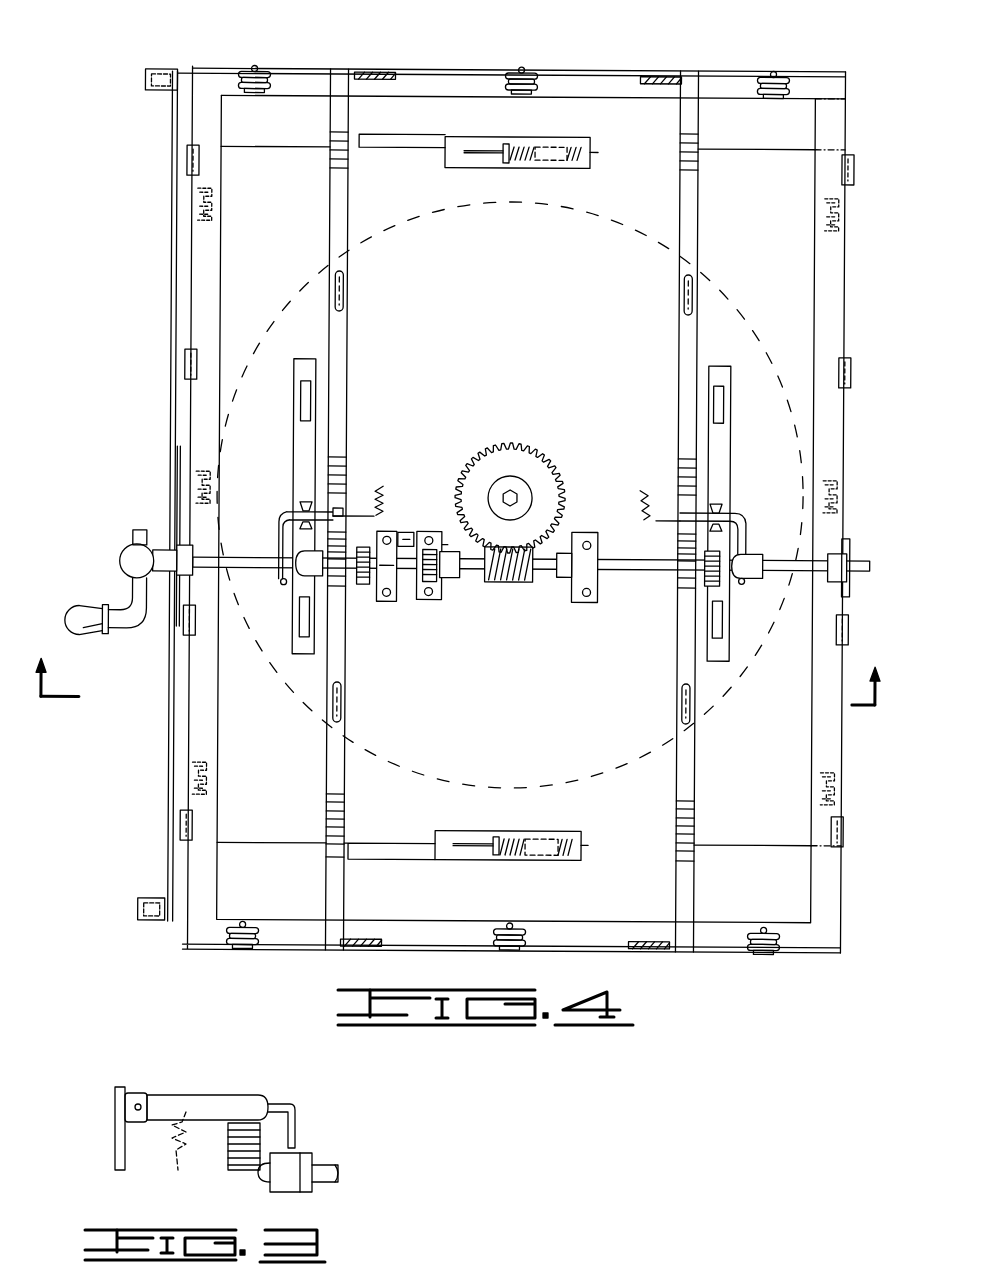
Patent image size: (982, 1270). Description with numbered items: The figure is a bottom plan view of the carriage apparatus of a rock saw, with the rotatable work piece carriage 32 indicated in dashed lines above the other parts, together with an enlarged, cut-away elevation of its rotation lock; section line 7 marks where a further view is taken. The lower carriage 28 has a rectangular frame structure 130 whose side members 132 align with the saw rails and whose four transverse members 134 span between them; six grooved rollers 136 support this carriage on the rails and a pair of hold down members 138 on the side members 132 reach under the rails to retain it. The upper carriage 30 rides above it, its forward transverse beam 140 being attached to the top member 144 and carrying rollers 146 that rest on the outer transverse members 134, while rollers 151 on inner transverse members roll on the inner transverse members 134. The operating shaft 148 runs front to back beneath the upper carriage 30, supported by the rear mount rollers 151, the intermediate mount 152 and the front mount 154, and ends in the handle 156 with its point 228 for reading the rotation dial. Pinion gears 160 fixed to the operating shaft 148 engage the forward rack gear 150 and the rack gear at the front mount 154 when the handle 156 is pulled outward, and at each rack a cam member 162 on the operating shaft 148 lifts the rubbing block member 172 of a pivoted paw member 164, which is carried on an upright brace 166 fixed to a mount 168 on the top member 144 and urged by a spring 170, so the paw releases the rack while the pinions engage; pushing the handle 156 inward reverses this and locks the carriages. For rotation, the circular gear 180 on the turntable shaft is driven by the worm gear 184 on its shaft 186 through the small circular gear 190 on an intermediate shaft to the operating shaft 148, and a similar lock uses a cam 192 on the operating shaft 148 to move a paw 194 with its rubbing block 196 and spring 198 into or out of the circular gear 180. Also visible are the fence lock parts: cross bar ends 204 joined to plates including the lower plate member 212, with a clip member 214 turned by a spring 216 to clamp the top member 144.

In FIG. 4, the section line 7- 7 is at (458, 670).
In FIG. 4, the lower carriage 28 is at (475, 36).
In FIG. 4, the upper carriage 30 is at (604, 128).
In FIG. 4, the work piece carriage 32 is at (766, 337).
In FIG. 4, the rectangular frame structure 130 is at (815, 67).
In FIG. 4, the side members 132 is at (470, 82).
In FIG. 4, the transverse members 134 is at (325, 888).
In FIG. 4, the rollers 136 is at (246, 67).
In FIG. 4, the hold down members 138 is at (364, 73).
In FIG. 4, the forward transverse beam 140 is at (839, 568).
In FIG. 4, the top member 144 is at (769, 133).
In FIG. 4, the rollers 146 is at (197, 208).
In FIG. 4, the operating shaft 148 is at (620, 564).
In FIG. 9, the operating shaft 148 is at (338, 1172).
In FIG. 4, the forward rack gear 150 is at (347, 470).
In FIG. 4, the rollers 151 is at (343, 293).
In FIG. 4, the intermediate mount 152 is at (384, 600).
In FIG. 4, the front mount 154 is at (678, 458).
In FIG. 4, the handle 156 is at (120, 568).
In FIG. 4, the pinion gears 160 is at (360, 588).
In FIG. 9, the pinion gears 160 is at (228, 1166).
In FIG. 4, the cam member 162 is at (308, 571).
In FIG. 9, the cam member 162 is at (300, 1166).
In FIG. 4, the pivoted paw member 164 is at (287, 516).
In FIG. 9, the pivoted paw member 164 is at (205, 1105).
In FIG. 4, the upright brace 166 is at (302, 503).
In FIG. 4, the mount 168 is at (303, 362).
In FIG. 4, the spring 170 is at (386, 473).
In FIG. 9, the spring 170 is at (175, 1165).
In FIG. 4, the rubbing block member 172 is at (514, 492).
In FIG. 4, the circular gear 180 is at (490, 448).
In FIG. 4, the worm gear 184 is at (505, 586).
In FIG. 4, the shaft 186 is at (576, 567).
In FIG. 4, the small circular gear 190 is at (440, 592).
In FIG. 4, the cam 192 is at (462, 574).
In FIG. 4, the paw 194 is at (412, 532).
In FIG. 4, the rubbing block 196 is at (452, 516).
In FIG. 4, the spring 198 is at (408, 596).
In FIG. 4, the cross bar ends 204 is at (366, 147).
In FIG. 4, the lower plate member 212 is at (458, 120).
In FIG. 4, the clip member 214 is at (504, 144).
In FIG. 4, the spring 216 is at (518, 144).
In FIG. 4, the point 228 is at (150, 600).